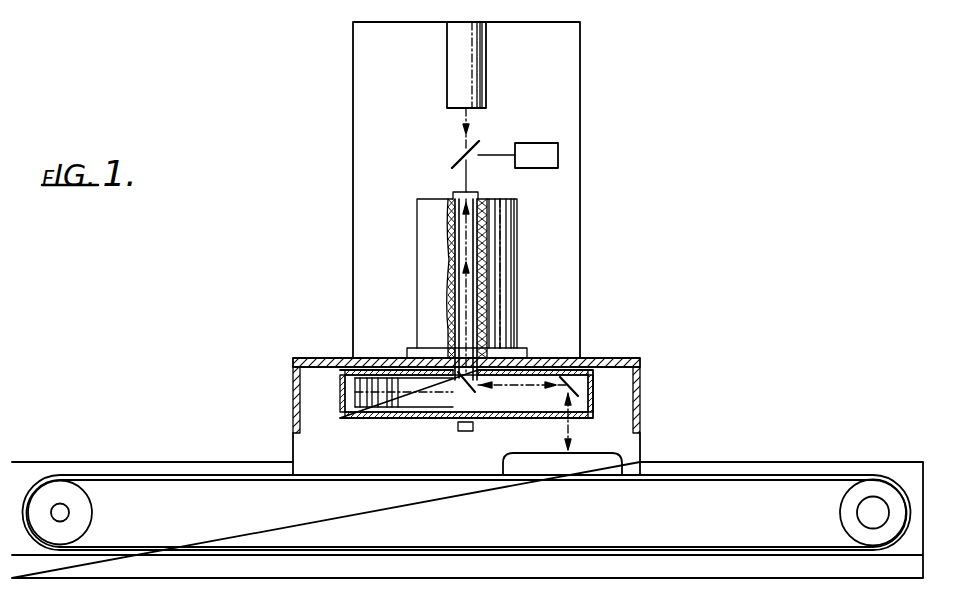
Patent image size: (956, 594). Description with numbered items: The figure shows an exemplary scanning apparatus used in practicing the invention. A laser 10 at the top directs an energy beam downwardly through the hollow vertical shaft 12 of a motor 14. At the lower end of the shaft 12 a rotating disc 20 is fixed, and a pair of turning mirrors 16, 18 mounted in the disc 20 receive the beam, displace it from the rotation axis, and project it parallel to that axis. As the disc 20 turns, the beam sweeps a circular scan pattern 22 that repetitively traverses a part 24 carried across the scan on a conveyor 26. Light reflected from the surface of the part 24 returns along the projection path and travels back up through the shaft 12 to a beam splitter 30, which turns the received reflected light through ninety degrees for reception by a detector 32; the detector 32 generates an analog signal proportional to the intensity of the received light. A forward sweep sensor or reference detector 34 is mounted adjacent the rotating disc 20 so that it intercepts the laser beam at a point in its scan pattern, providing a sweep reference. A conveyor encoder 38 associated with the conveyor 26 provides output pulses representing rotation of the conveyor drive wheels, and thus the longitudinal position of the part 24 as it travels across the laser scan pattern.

The laser 10 is at (486, 63).
The hollow vertical shaft 12 is at (485, 263).
The motor 14 is at (518, 296).
The turning mirror 16 is at (475, 385).
The turning mirror 18 is at (579, 385).
The rotating disc 20 is at (556, 378).
The circular scan pattern 22 is at (568, 428).
The part 24 is at (503, 459).
The conveyor 26 is at (375, 454).
The beam splitter 30 is at (455, 153).
The detector 32 is at (552, 143).
The forward sweep sensor 34 is at (457, 428).
The conveyor encoder 38 is at (862, 510).